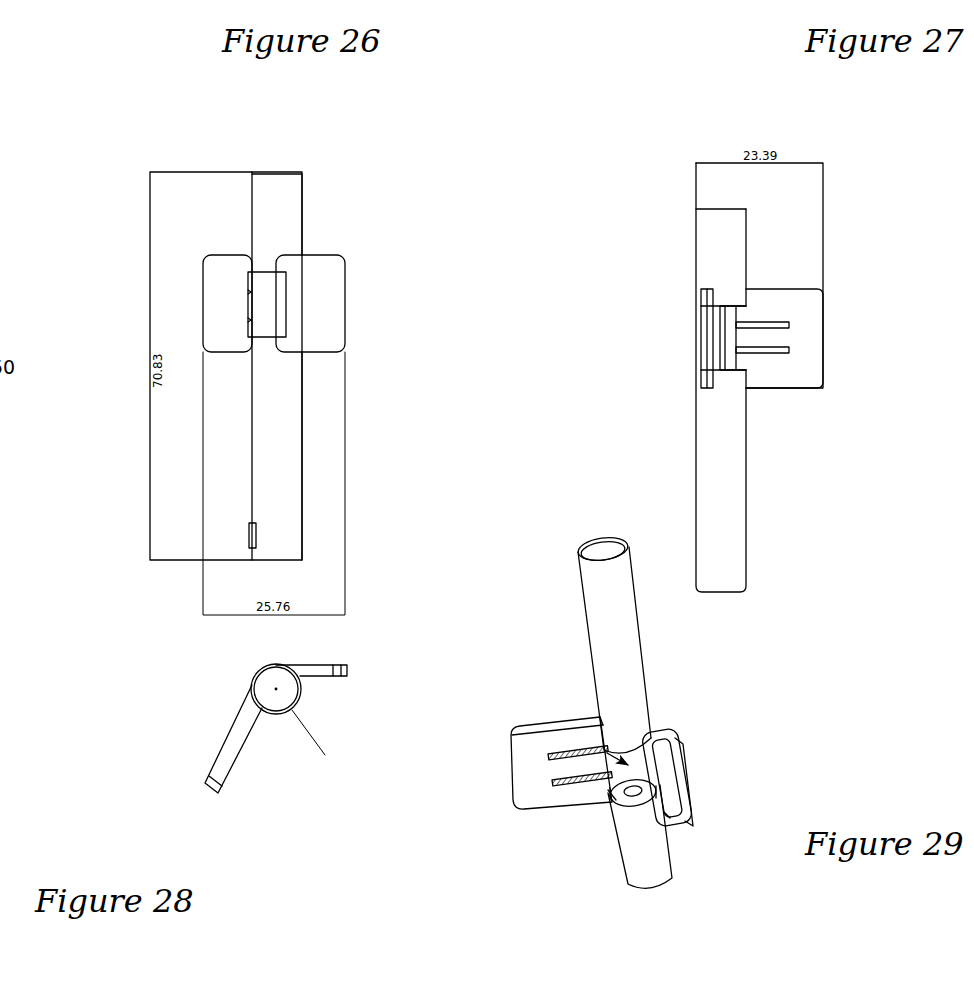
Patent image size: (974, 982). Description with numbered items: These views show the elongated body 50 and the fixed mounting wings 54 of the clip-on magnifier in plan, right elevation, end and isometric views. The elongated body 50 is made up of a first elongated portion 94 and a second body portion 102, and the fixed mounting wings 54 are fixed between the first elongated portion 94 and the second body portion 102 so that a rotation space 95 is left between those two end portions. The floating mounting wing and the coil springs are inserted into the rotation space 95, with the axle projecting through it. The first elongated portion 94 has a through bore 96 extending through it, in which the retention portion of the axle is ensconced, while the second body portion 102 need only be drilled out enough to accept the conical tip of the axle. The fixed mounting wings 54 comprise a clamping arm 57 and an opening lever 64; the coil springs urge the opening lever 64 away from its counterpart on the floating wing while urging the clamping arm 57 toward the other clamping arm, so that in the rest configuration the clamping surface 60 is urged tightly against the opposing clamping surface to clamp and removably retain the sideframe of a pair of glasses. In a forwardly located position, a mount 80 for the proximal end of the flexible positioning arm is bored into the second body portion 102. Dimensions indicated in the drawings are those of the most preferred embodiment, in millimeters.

In FIG. 26, the elongated body 50 is at (352, 395).
In FIG. 27, the elongated body 50 is at (760, 470).
In FIG. 29, the elongated body 50 is at (690, 683).
In FIG. 28, the mounting wings 54 is at (352, 712).
In FIG. 26, the clamping arm 57 is at (237, 306).
In FIG. 29, the clamping arm 57 is at (686, 745).
In FIG. 29, the clamping surface 60 is at (655, 815).
In FIG. 26, the opening lever 64 is at (324, 306).
In FIG. 27, the opening lever 64 is at (805, 379).
In FIG. 29, the opening lever 64 is at (548, 797).
In FIG. 26, the mount 80 is at (220, 535).
In FIG. 26, the first elongated portion 94 is at (316, 218).
In FIG. 27, the first elongated portion 94 is at (673, 257).
In FIG. 29, the first elongated portion 94 is at (600, 868).
In FIG. 29, the rotation space 95 is at (607, 753).
In FIG. 29, the through bore 96 is at (612, 800).
In FIG. 26, the second body portion 102 is at (315, 500).
In FIG. 27, the second body portion 102 is at (678, 493).
In FIG. 29, the second body portion 102 is at (581, 635).